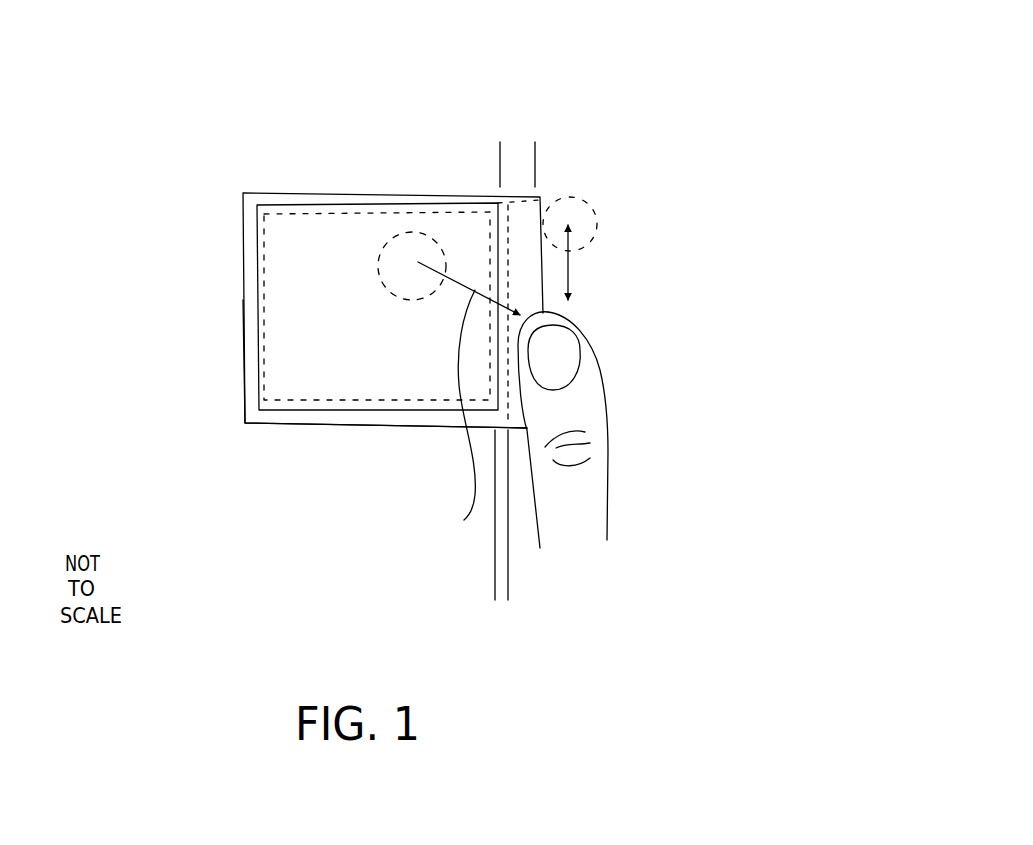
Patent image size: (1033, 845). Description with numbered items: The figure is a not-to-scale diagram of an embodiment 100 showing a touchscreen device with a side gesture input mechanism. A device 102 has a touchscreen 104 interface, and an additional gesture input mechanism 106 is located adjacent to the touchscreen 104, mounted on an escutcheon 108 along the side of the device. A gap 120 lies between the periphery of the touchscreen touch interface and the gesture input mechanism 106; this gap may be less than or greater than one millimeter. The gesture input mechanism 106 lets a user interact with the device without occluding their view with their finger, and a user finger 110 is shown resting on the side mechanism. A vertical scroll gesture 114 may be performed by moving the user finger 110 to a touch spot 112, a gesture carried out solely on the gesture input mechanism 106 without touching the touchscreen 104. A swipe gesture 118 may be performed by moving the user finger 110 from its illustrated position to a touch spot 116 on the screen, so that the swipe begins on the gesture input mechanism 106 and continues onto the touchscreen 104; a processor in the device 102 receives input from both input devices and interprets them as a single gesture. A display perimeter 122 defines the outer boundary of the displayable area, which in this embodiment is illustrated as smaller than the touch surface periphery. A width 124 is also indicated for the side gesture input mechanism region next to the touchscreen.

The embodiment 100 is at (690, 636).
The device 102 is at (240, 330).
The touchscreen 104 is at (345, 246).
The gesture input mechanism 106 is at (538, 204).
The escutcheon 108 is at (410, 430).
The user finger 110 is at (608, 452).
The touch spot 112 is at (588, 207).
The vertical scroll gesture 114 is at (573, 262).
The touch spot 116 is at (420, 214).
The swipe gesture 118 is at (403, 439).
The gap 120 is at (465, 592).
The display perimeter 122 is at (243, 252).
The width 124 is at (475, 161).